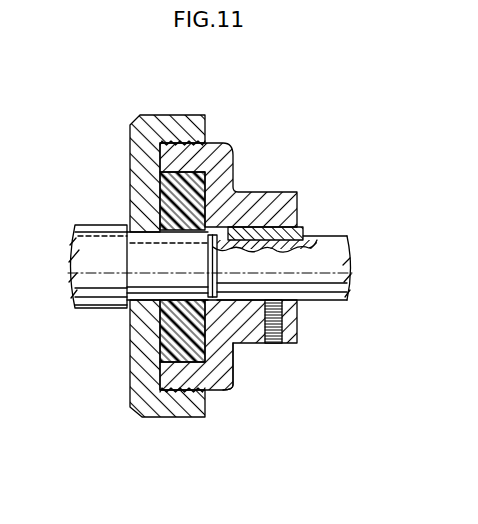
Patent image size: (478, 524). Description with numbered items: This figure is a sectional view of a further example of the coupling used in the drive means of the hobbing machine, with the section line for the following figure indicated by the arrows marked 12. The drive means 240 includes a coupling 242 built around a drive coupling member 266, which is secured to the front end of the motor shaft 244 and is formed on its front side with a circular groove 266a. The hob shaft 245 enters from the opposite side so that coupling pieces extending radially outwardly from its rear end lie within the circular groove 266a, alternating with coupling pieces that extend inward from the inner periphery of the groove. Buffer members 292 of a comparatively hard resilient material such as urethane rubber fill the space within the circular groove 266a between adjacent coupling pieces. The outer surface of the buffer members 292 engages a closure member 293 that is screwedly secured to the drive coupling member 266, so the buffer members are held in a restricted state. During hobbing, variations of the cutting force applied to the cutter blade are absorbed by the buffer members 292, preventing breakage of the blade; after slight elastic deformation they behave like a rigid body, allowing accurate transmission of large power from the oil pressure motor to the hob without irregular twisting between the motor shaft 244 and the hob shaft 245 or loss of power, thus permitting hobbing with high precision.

The drive means 240 is at (146, 266).
The coupling 242 is at (130, 156).
The buffer members 292 is at (165, 193).
The drive coupling member 266 is at (253, 266).
The circular groove 266a is at (235, 350).
The motor shaft 244 is at (335, 236).
The hob shaft 245 is at (103, 309).
The closure member 293 is at (138, 385).
The section line for FIG. 12 is at (182, 100).